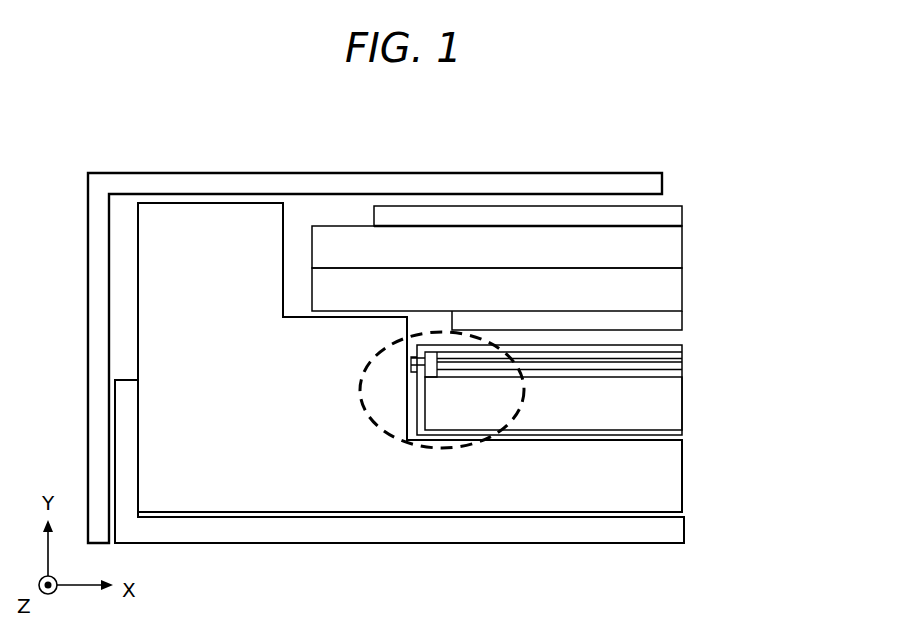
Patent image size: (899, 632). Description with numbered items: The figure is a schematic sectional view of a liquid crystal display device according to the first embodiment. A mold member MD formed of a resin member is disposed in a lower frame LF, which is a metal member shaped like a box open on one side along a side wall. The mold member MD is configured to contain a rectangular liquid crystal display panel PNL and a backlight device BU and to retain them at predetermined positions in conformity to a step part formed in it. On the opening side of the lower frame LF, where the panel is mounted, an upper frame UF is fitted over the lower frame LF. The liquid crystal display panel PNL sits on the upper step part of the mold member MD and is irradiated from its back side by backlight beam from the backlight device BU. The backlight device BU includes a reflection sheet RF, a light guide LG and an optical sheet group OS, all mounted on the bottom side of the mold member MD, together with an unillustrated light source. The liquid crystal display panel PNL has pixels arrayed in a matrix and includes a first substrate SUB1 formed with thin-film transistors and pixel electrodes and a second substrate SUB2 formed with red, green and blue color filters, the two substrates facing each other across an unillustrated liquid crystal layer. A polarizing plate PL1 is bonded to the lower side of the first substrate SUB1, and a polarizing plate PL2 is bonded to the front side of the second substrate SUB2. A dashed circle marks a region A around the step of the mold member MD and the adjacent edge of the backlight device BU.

The upper frame UF is at (428, 180).
The polarizing plate PL2 is at (672, 215).
The second substrate SUB2 is at (672, 250).
The first substrate SUB1 is at (672, 291).
The polarizing plate PL1 is at (624, 324).
The liquid crystal display panel PNL is at (589, 264).
The optical sheet group OS is at (693, 337).
The light guide LG is at (670, 405).
The reflection sheet RF is at (668, 435).
The backlight device BU is at (633, 392).
The mold member MD is at (670, 480).
The lower frame LF is at (668, 528).
The region A is at (438, 391).